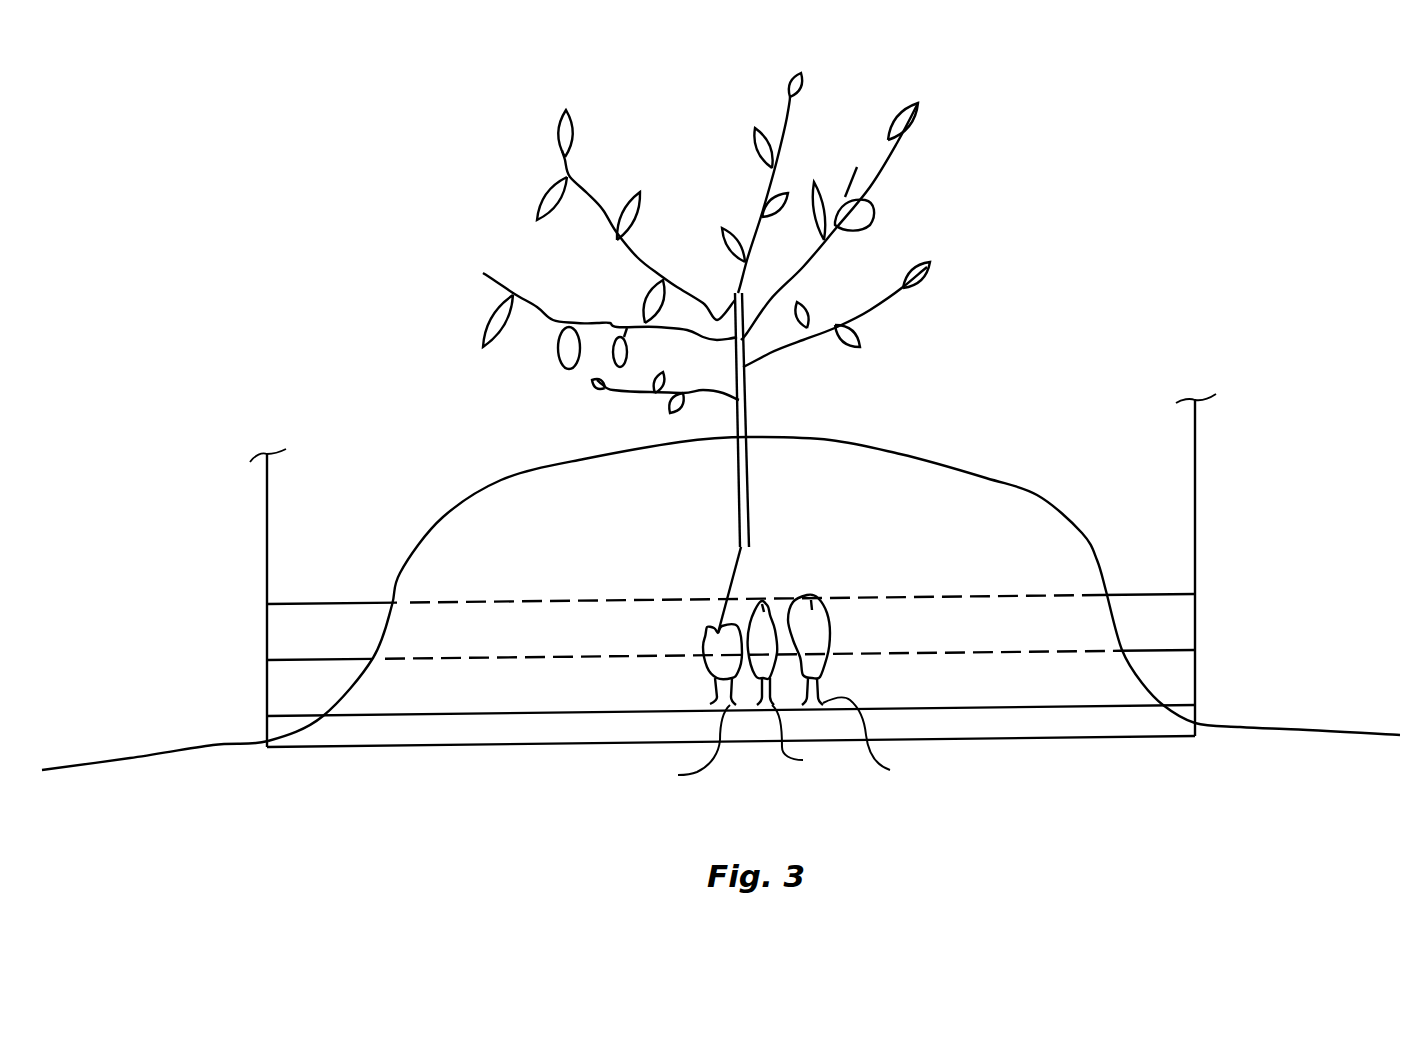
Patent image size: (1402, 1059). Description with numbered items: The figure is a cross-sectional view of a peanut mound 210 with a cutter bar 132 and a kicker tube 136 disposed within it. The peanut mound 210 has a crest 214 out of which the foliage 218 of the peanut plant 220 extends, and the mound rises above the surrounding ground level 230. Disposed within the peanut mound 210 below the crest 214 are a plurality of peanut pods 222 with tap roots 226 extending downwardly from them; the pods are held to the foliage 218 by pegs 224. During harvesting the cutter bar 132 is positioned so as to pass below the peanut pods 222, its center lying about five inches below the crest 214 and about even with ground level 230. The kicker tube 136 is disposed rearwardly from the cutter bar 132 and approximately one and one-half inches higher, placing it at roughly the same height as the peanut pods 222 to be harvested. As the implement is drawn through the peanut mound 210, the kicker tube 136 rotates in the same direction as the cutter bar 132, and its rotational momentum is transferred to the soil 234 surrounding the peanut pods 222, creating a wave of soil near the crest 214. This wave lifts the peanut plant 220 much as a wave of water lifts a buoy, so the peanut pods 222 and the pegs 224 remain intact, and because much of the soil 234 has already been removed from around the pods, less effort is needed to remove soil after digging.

The cutter bar 132 is at (372, 733).
The kicker tube 136 is at (470, 624).
The peanut mound 210 is at (964, 421).
The crest 214 is at (787, 437).
The foliage 218 is at (887, 228).
The peanut plant 220 is at (553, 421).
The peanut pods 222 is at (705, 640).
The pegs 224 is at (747, 502).
The tap roots 226 is at (710, 702).
The ground level 230 is at (1281, 729).
The soil 234 is at (934, 577).